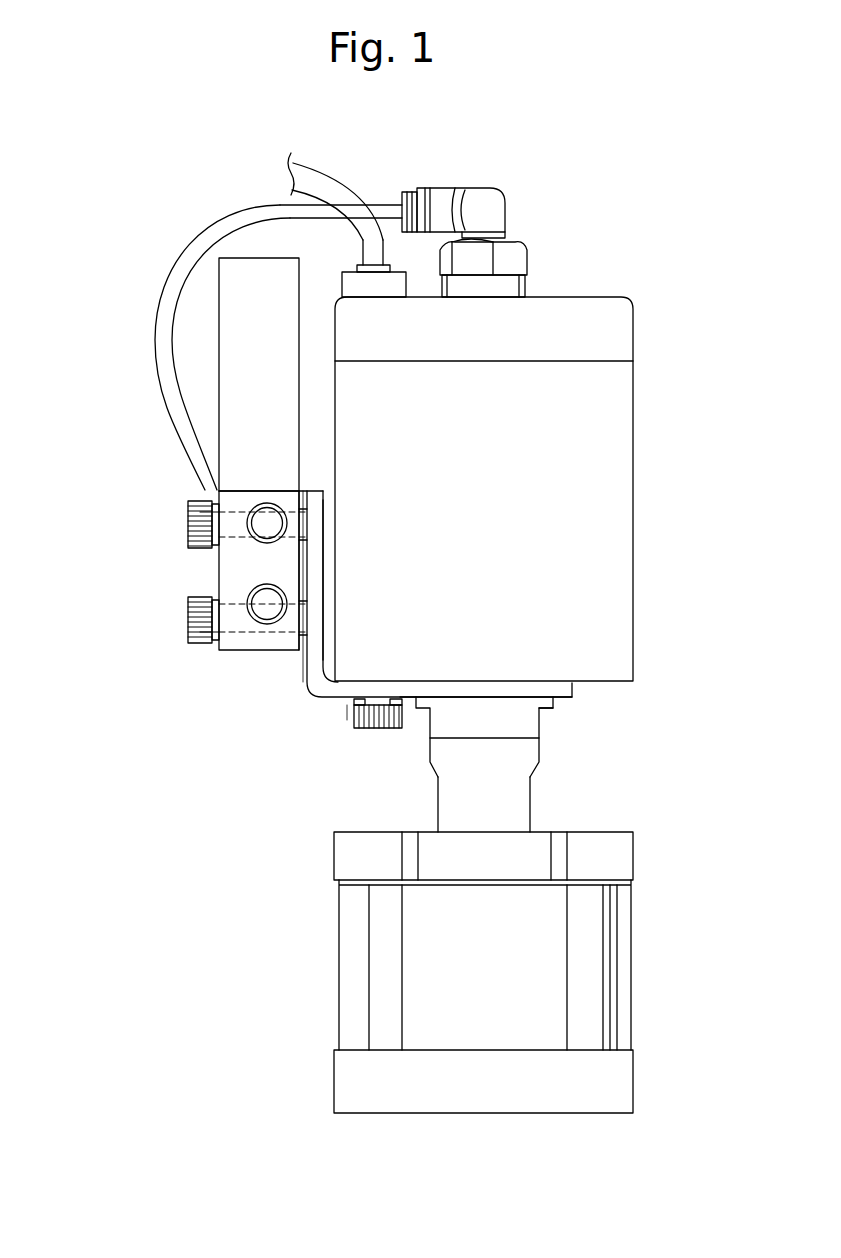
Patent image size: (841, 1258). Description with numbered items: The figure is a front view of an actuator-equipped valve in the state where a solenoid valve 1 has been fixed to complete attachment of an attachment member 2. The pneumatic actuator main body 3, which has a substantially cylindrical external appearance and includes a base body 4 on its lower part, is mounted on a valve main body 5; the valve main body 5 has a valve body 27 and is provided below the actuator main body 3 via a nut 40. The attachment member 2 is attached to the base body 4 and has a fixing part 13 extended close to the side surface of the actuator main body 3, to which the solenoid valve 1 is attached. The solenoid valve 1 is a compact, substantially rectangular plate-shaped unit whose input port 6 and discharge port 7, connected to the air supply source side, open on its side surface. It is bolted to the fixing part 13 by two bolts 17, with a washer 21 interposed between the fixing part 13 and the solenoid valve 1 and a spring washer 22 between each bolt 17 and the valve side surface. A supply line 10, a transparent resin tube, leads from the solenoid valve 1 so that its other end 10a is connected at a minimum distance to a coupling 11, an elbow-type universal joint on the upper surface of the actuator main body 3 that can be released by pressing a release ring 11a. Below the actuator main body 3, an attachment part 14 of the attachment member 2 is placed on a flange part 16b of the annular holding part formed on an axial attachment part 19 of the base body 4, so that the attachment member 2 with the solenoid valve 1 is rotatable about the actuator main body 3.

The solenoid valve 1 is at (231, 671).
The attachment member 2 is at (312, 697).
The actuator main body 3 is at (658, 343).
The base body 4 is at (527, 722).
The valve main body 5 is at (474, 968).
The input port 6 is at (267, 600).
The discharge port 7 is at (267, 528).
The supply line 10 is at (158, 340).
The another end of supply line 10a is at (386, 205).
The coupling 11 is at (520, 258).
The release ring 11a is at (424, 188).
The fixing part 13 is at (315, 568).
The attachment part 14 is at (562, 690).
The flange part 16b is at (548, 703).
The bolt 17 is at (187, 522).
The axial attachment part 19 is at (518, 810).
The washer 21 is at (300, 480).
The spring washer 22 is at (196, 473).
The valve body 27 is at (440, 985).
The nut 40 is at (357, 852).